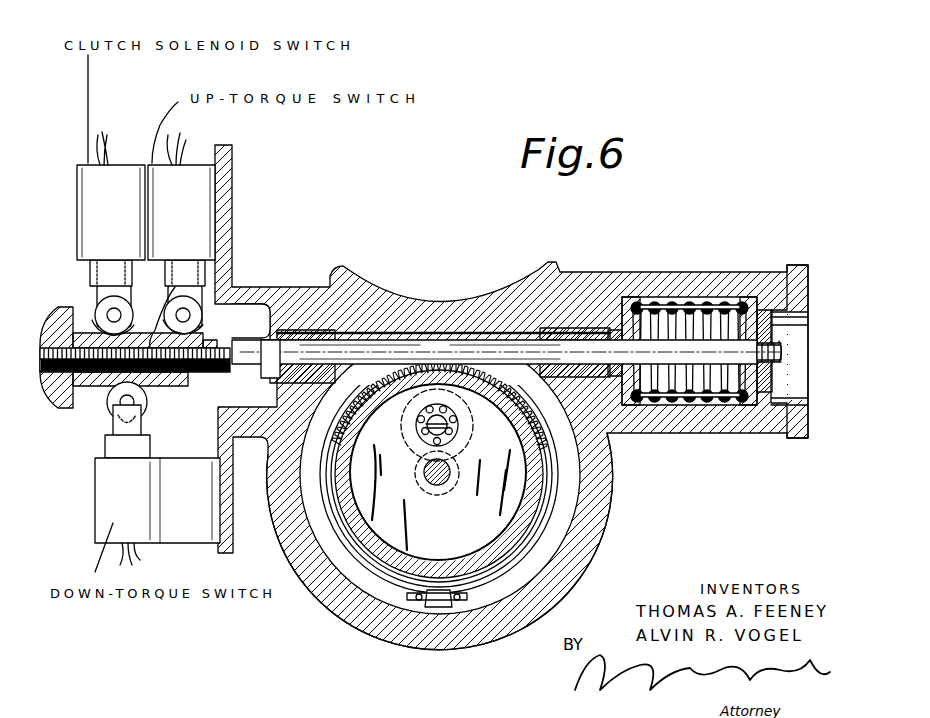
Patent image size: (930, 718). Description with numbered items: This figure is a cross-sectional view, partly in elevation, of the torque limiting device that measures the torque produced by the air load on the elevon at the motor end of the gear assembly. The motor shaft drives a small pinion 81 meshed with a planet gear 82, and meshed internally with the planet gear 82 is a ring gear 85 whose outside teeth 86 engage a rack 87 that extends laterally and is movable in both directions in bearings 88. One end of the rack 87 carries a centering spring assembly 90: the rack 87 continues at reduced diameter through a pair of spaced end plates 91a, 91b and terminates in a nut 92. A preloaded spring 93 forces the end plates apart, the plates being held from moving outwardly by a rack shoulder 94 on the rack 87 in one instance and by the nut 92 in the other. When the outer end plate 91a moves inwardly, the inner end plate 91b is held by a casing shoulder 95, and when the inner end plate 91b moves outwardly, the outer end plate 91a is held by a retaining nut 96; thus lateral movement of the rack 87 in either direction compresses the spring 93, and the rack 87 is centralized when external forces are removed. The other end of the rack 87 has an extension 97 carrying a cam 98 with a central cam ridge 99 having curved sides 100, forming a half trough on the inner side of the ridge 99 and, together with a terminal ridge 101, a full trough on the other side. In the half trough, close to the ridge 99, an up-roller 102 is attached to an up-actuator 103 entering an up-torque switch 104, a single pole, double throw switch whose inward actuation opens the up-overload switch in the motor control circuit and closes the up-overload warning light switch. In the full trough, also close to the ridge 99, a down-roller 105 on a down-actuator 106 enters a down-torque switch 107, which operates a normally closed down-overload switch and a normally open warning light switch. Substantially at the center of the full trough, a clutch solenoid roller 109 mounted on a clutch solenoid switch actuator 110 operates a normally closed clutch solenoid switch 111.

The pinion 81 is at (437, 494).
The planet gear 82 is at (471, 420).
The ring gear 85 is at (537, 463).
The outside teeth 86 is at (397, 366).
The rack 87 is at (462, 340).
The bearings 88 is at (331, 287).
The centering spring assembly 90 is at (721, 300).
The outer end plate 91a is at (764, 308).
The inner end plate 91b is at (666, 300).
The nut 92 is at (770, 388).
The preloaded spring 93 is at (690, 300).
The rack shoulder 94 is at (615, 330).
The casing shoulder 95 is at (634, 300).
The retaining nut 96 is at (798, 268).
The extension 97 is at (244, 366).
The cam 98 is at (222, 368).
The central cam ridge 99 is at (173, 290).
The curved sides 100 is at (140, 328).
The terminal ridge 101 is at (77, 332).
The up-roller 102 is at (203, 314).
The up-actuator 103 is at (236, 288).
The up-torque switch 104 is at (181, 196).
The down-roller 105 is at (107, 404).
The down-actuator 106 is at (106, 440).
The down-torque switch 107 is at (157, 515).
The clutch solenoid roller 109 is at (157, 300).
The clutch solenoid switch actuator 110 is at (115, 285).
The clutch solenoid switch 111 is at (111, 196).